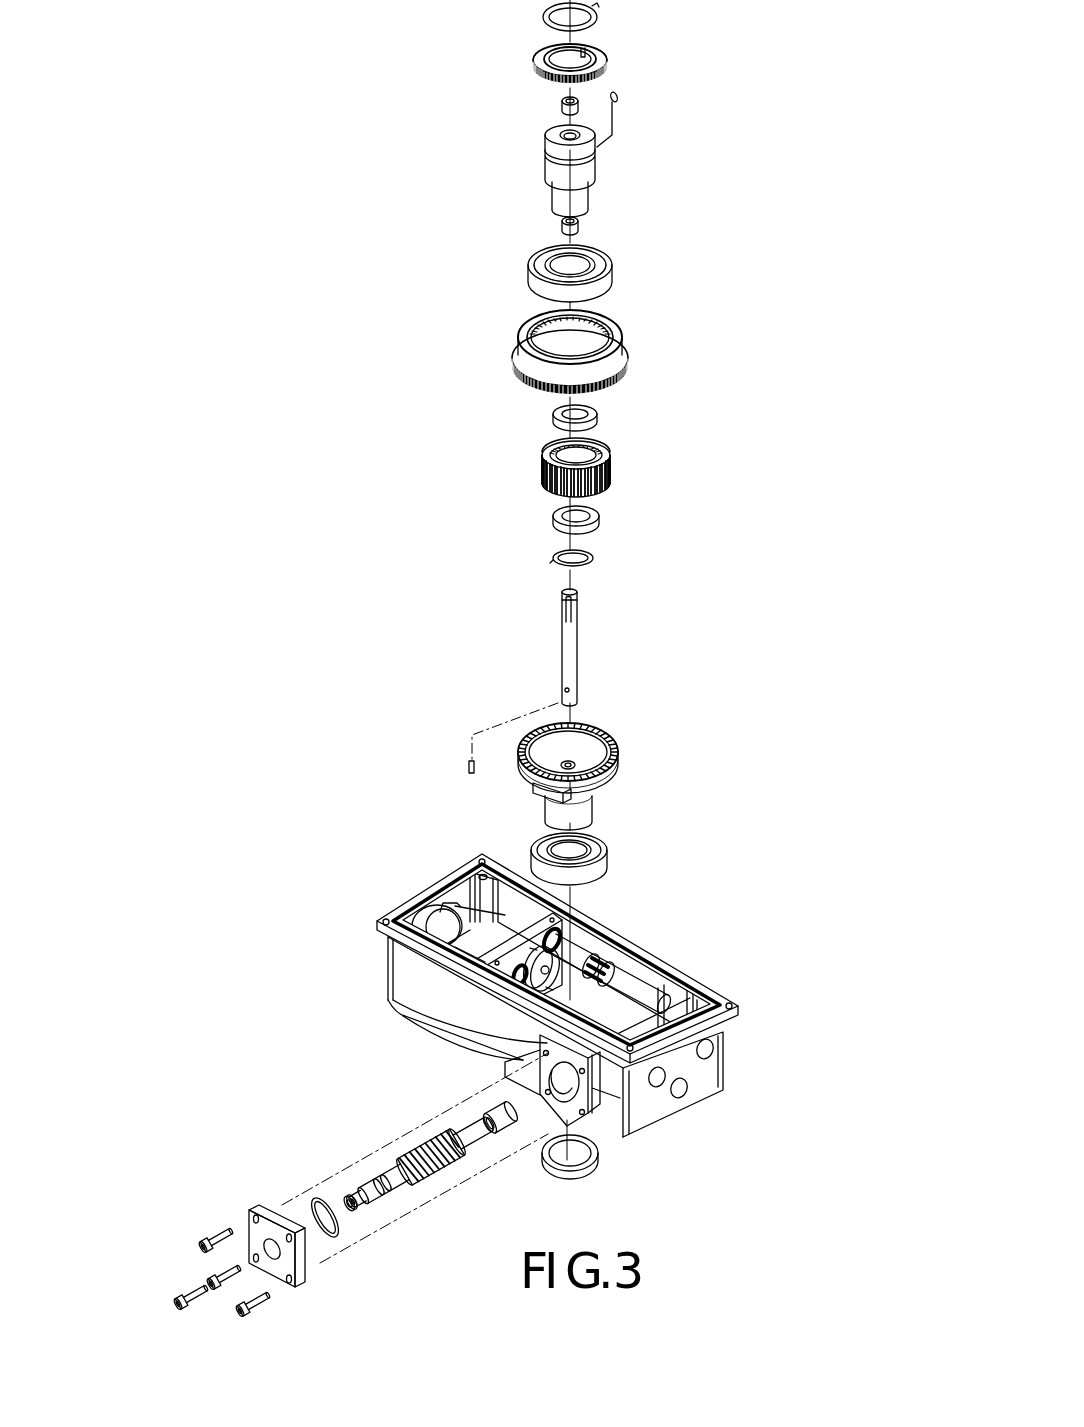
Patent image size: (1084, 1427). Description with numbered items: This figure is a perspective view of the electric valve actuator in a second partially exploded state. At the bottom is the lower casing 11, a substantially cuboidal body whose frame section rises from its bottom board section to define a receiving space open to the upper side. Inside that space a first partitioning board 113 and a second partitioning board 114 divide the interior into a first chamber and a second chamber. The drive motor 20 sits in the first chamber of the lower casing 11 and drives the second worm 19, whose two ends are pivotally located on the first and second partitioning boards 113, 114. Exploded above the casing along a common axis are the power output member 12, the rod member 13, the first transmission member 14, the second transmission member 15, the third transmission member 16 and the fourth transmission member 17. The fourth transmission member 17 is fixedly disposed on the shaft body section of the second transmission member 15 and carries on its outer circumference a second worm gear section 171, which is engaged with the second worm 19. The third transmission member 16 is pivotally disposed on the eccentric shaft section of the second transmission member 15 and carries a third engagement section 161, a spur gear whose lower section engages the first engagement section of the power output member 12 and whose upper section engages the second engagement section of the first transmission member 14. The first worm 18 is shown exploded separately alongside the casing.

The lower casing 11 is at (725, 1055).
The first partitioning board 113 is at (511, 958).
The second partitioning board 114 is at (648, 1028).
The power output member 12 is at (630, 780).
The rod member 13 is at (588, 645).
The first transmission member 14 is at (632, 352).
The second transmission member 15 is at (538, 162).
The third transmission member 16 is at (569, 464).
The third engagement section 161 is at (540, 470).
The fourth transmission member 17 is at (567, 63).
The second worm gear section 171 is at (537, 70).
The first worm 18 is at (418, 1150).
The second worm 19 is at (630, 987).
The drive motor 20 is at (462, 933).